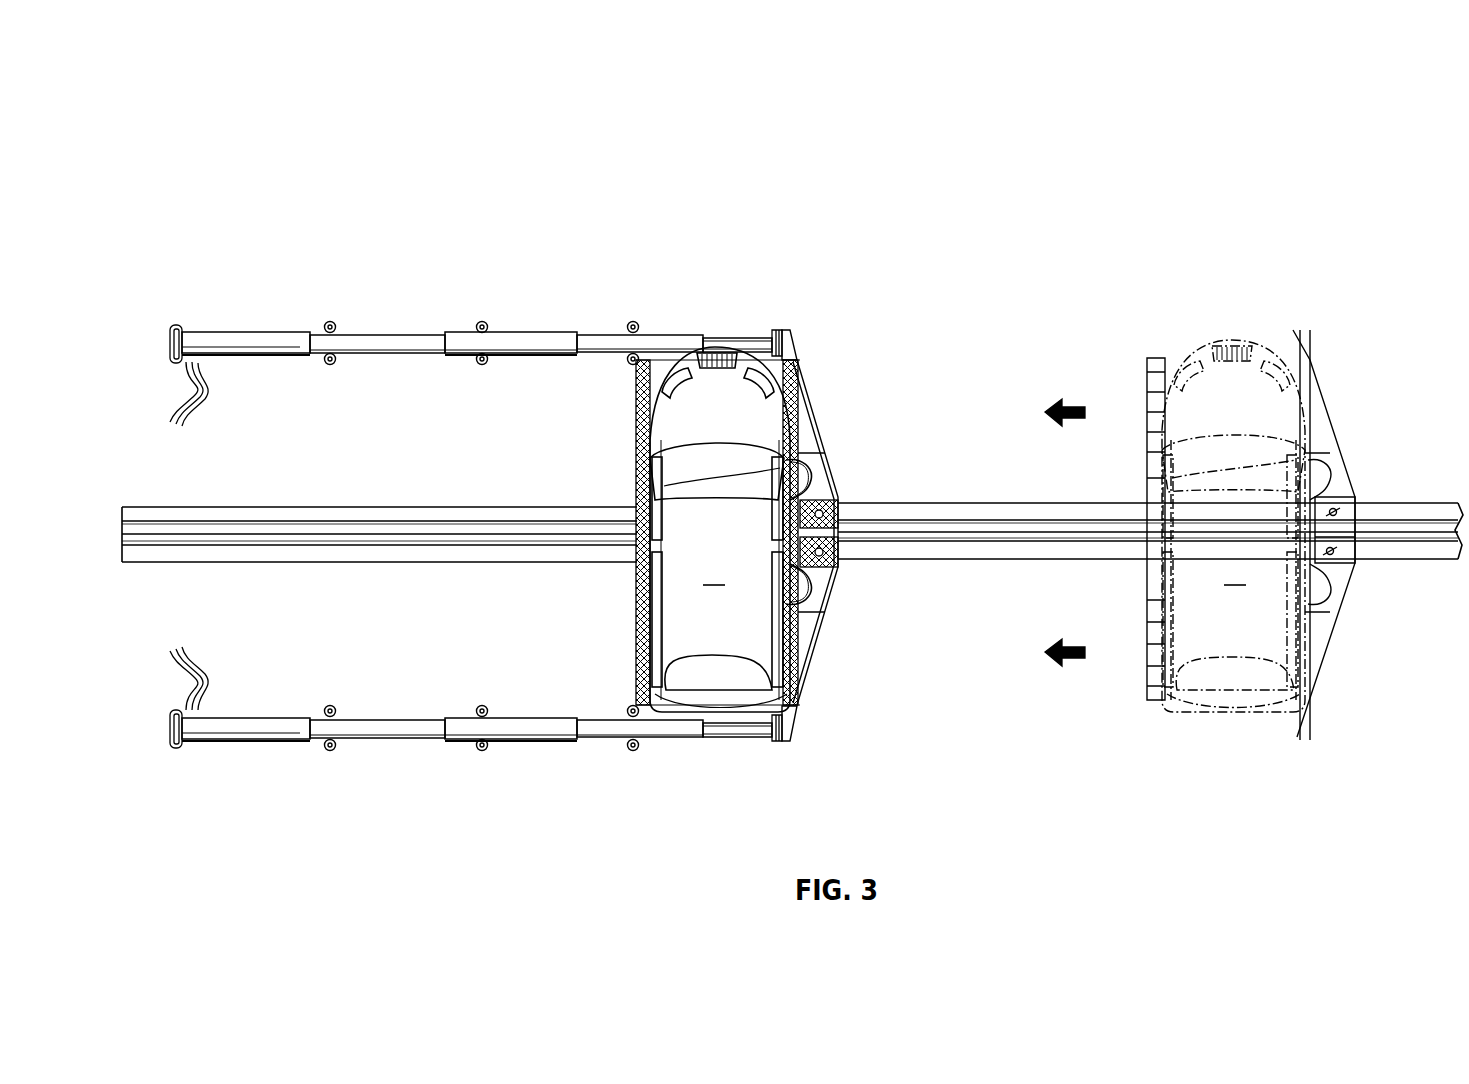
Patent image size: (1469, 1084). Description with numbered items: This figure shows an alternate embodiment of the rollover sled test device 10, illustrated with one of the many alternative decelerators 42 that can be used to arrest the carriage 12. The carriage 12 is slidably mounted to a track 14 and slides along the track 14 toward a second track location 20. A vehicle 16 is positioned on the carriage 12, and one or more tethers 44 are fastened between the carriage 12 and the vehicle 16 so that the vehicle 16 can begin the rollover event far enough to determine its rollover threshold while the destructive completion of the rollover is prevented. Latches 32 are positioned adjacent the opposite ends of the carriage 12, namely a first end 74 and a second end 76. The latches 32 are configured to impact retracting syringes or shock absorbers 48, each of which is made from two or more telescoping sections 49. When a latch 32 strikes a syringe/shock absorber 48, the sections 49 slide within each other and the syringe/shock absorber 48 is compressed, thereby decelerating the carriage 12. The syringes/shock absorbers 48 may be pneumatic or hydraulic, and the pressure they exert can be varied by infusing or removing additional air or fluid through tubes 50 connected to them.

The rollover sled test device 10 is at (938, 248).
The carriage 12 is at (862, 432).
The track 14 is at (968, 530).
The vehicle 16 is at (1002, 535).
The second track location 20 is at (300, 538).
The latch 32 is at (790, 346).
The decelerator 42 is at (698, 326).
The tether 44 is at (818, 490).
The retracting syringe or shock absorber 48 is at (453, 334).
The telescoping section 49 is at (236, 340).
The tube 50 is at (200, 412).
The first end of the carriage 74 is at (729, 350).
The second end of the carriage 76 is at (680, 729).